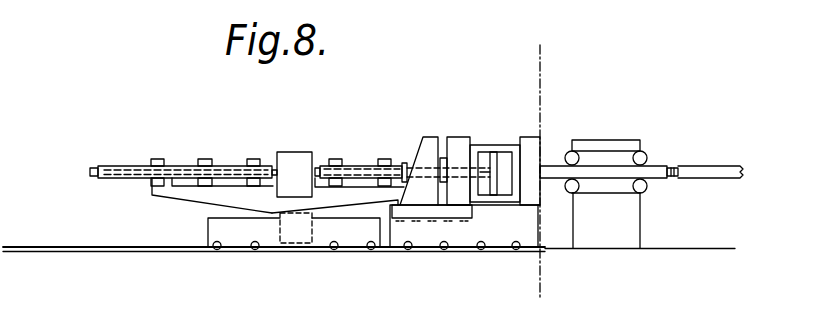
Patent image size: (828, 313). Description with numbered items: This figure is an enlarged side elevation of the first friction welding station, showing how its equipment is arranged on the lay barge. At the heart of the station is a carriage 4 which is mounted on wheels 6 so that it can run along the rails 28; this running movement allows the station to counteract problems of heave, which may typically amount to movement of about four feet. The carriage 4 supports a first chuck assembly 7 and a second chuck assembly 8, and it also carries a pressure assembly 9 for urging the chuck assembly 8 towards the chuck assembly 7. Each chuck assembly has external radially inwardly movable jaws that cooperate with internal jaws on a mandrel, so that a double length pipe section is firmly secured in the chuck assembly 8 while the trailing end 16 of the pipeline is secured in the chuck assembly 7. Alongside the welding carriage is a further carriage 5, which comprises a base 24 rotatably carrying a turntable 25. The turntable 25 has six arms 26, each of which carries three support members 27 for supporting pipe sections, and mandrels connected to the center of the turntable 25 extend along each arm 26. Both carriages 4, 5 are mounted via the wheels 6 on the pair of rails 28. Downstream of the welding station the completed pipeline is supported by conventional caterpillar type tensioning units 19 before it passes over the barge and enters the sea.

The carriage 4 is at (507, 230).
The carriage 5 is at (227, 232).
The wheels 6 is at (255, 250).
The first chuck assembly 7 is at (529, 128).
The second chuck assembly 8 is at (465, 122).
The pressure assembly 9 is at (430, 123).
The trailing end 16 is at (655, 168).
The tensioning units 19 is at (613, 237).
The base 24 is at (327, 235).
The turntable 25 is at (314, 166).
The arms 26 is at (190, 197).
The support members 27 is at (158, 158).
The rails 28 is at (72, 253).